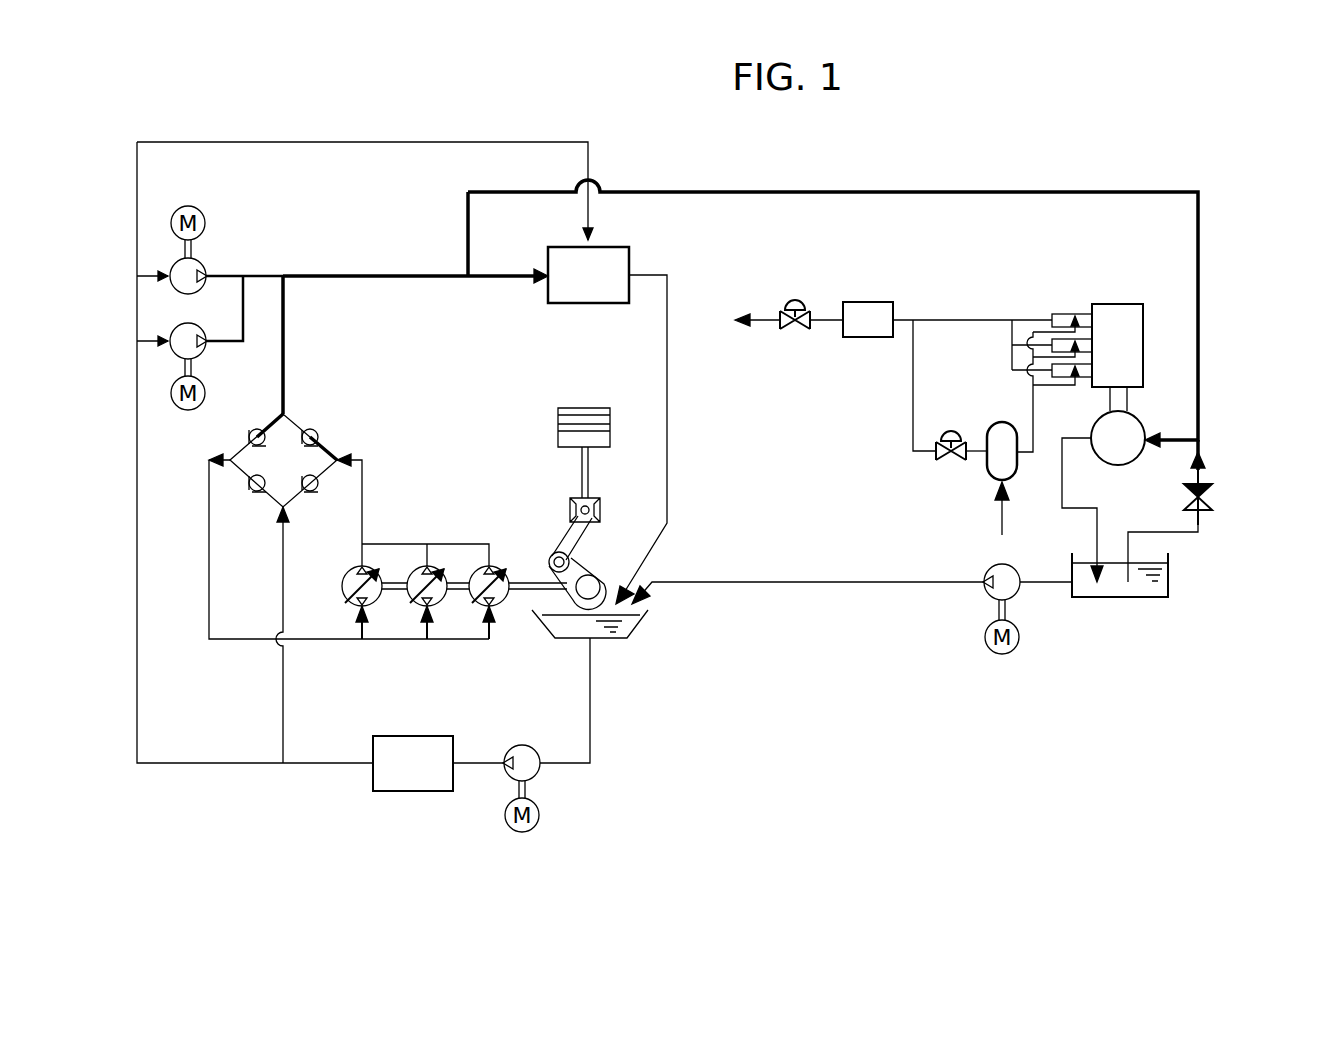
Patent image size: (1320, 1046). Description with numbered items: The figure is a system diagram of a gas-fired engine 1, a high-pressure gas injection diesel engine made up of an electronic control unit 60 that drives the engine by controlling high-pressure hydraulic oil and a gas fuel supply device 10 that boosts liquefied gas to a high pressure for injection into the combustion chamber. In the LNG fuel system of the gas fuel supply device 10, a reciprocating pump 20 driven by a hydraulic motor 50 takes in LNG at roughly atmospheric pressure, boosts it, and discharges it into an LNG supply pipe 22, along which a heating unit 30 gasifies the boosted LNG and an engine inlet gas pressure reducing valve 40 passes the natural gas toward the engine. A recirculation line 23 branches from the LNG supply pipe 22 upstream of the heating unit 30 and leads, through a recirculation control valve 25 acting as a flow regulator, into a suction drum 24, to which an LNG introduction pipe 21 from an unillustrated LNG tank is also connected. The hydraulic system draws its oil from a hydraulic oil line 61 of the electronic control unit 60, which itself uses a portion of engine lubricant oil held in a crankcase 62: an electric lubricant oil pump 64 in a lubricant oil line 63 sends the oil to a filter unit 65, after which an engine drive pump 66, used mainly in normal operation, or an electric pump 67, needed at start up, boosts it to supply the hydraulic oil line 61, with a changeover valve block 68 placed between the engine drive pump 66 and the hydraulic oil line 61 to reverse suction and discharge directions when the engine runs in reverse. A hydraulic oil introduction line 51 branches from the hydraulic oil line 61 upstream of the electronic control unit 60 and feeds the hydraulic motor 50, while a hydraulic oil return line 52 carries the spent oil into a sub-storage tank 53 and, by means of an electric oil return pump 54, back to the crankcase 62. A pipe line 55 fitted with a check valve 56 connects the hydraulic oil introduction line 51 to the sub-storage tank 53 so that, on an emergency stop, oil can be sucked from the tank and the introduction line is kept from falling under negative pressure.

The gas-fired engine 1 is at (950, 142).
The gas fuel supply device 10 is at (878, 438).
The reciprocating pump 20 is at (1117, 303).
The LNG introduction pipe 21 is at (1004, 520).
The LNG supply pipe 22 is at (970, 318).
The recirculation line 23 is at (911, 390).
The suction drum 24 is at (984, 472).
The recirculation control valve 25 is at (950, 428).
The heating unit 30 is at (866, 300).
The engine inlet gas pressure reducing valve 40 is at (795, 293).
The hydraulic motor 50 is at (1092, 420).
The hydraulic oil introduction line 51 is at (781, 190).
The hydraulic oil return line 52 is at (1064, 488).
The sub-storage tank 53 is at (1128, 598).
The electric oil return pump 54 is at (1018, 594).
The pipe line 55 is at (1204, 532).
The check valve 56 is at (1214, 491).
The electronic control unit 60 is at (631, 255).
The hydraulic oil line 61 is at (360, 273).
The crankcase 62 is at (640, 622).
The lubricant oil line 63 is at (592, 703).
The electric lubricant oil pump 64 is at (522, 744).
The filter unit 65 is at (413, 792).
The engine drive pump 66 is at (352, 570).
The electric pump 67 is at (206, 272).
The changeover valve block 68 is at (317, 439).